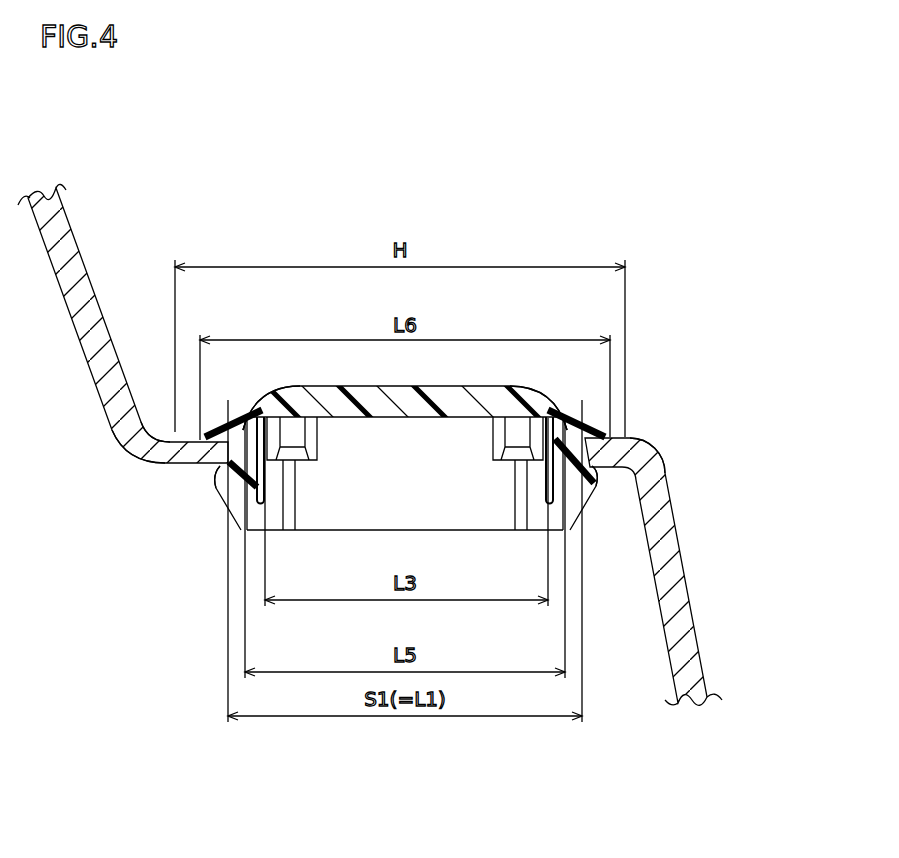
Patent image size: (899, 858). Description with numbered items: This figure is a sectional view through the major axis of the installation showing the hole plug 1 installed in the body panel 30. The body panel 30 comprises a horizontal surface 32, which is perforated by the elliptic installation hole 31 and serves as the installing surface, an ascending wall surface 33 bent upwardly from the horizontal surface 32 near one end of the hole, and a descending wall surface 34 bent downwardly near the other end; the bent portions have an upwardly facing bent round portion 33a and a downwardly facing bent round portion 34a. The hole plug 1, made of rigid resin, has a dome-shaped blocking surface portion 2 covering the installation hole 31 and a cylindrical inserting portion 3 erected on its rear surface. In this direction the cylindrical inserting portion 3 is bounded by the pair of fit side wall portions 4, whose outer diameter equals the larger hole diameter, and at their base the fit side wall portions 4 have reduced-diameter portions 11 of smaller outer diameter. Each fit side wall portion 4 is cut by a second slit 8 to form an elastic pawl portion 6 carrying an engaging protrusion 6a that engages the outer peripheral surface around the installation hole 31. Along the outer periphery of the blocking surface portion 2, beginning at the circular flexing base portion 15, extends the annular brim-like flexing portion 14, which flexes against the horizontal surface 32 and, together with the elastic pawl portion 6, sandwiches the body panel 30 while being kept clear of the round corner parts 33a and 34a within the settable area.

The hole plug 1 is at (400, 456).
The blocking surface portion 2 is at (486, 384).
The cylindrical inserting portion 3 is at (577, 533).
The fit side wall portion 4 is at (224, 460).
The elastic pawl portion 6 is at (406, 506).
The engaging protrusion 6a is at (226, 463).
The second slit 8 is at (265, 432).
The reduced-diameter portion 11 is at (259, 417).
The brim-like flexing portion 14 is at (203, 437).
The flexing base portion 15 is at (225, 425).
The body panel 30 is at (393, 424).
The installation hole 31 is at (230, 467).
The horizontal surface 32 is at (197, 440).
The ascending wall surface 33 is at (123, 323).
The bent round portion 33a is at (175, 432).
The descending wall surface 34 is at (676, 544).
The bent round portion 34a is at (657, 450).